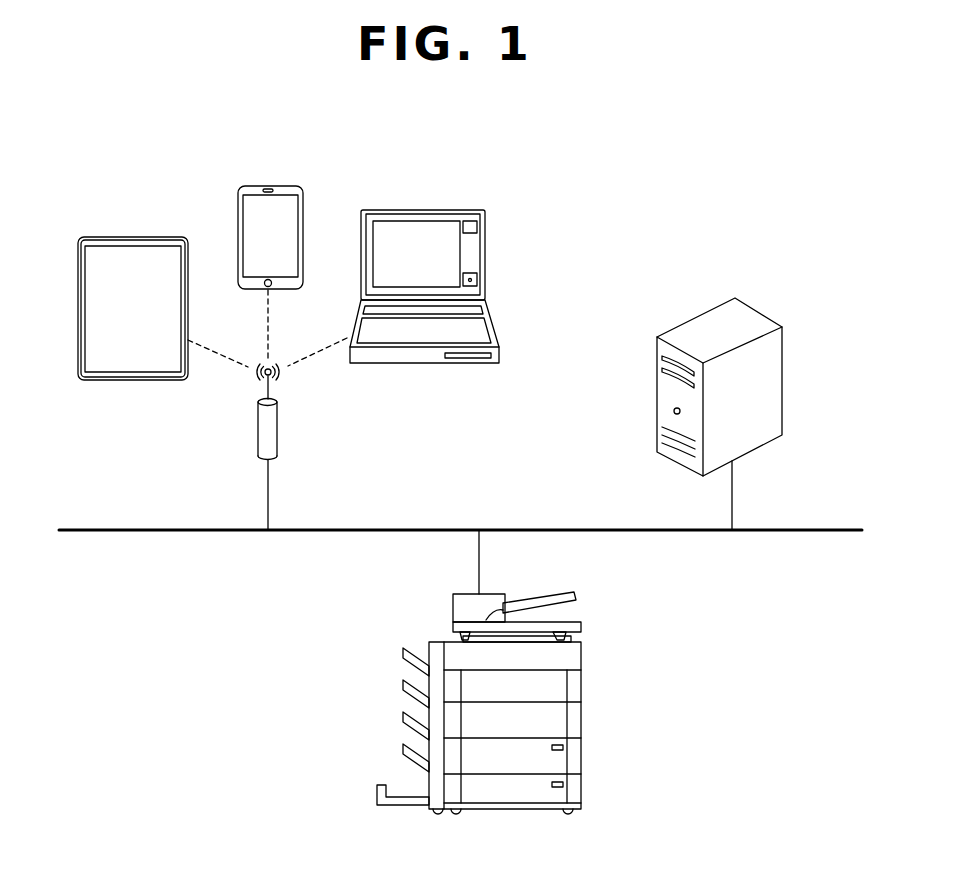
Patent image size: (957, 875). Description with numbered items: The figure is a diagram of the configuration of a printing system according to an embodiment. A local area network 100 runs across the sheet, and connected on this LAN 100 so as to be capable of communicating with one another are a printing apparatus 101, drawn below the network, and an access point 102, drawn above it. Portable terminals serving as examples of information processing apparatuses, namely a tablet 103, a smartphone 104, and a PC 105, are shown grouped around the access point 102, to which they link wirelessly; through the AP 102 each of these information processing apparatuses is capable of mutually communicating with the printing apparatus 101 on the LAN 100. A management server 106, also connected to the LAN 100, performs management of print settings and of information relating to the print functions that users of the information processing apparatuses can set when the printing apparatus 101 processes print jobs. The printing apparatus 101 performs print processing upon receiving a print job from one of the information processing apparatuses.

The local area network (LAN) 100 is at (834, 529).
The printing apparatus 101 is at (583, 690).
The access point (AP) 102 is at (279, 426).
The tablet 103 is at (128, 237).
The smartphone 104 is at (268, 186).
The PC 105 is at (487, 241).
The management server 106 is at (707, 312).